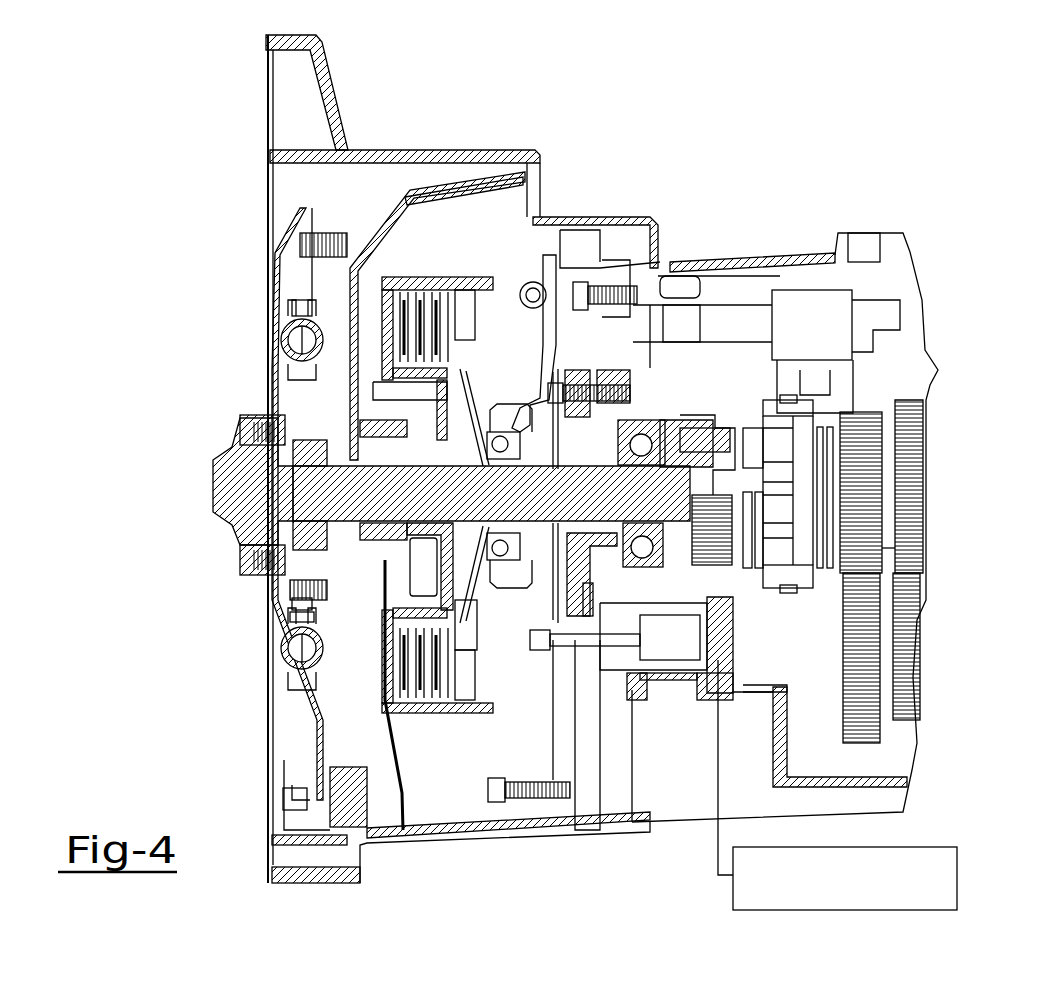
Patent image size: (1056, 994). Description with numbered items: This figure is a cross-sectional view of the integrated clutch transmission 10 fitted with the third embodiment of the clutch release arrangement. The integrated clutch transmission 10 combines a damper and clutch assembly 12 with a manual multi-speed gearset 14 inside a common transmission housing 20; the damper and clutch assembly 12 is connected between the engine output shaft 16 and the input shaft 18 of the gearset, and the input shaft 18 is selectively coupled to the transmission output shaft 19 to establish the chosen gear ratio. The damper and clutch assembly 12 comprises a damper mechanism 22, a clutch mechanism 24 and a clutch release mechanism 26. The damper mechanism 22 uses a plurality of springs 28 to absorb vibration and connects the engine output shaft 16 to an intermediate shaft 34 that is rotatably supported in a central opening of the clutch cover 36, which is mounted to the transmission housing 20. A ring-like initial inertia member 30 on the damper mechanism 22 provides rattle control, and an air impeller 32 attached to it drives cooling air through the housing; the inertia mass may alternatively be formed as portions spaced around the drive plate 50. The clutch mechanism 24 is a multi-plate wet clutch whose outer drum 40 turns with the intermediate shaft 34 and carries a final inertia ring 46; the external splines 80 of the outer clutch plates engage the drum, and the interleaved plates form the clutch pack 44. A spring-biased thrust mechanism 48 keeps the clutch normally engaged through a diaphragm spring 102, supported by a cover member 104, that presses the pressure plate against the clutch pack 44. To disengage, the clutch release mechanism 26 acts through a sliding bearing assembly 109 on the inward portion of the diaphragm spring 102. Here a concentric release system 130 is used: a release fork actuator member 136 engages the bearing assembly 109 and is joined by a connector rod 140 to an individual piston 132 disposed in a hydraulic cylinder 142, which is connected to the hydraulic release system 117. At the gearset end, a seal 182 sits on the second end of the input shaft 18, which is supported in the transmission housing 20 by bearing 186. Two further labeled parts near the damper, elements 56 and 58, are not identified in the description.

The integrated clutch transmission 10 is at (768, 152).
The damper and clutch assembly 12 is at (410, 233).
The multi-speed gearset 14 is at (820, 283).
The engine output shaft 16 is at (245, 435).
The input shaft 18 is at (415, 508).
The transmission output shaft 19 is at (895, 545).
The transmission housing 20 is at (895, 767).
The damper mechanism 22 is at (265, 763).
The clutch mechanism 24 is at (386, 688).
The clutch release mechanism 26 is at (515, 394).
The springs 28 is at (293, 652).
The initial inertia member 30 is at (353, 190).
The air impeller 32 is at (383, 813).
The intermediate shaft 34 is at (307, 490).
The clutch cover 36 is at (350, 316).
The outer drum 40 is at (440, 690).
The multi-disc clutch pack 44 is at (478, 208).
The final inertia ring 46 is at (503, 255).
The spring-biased thrust mechanism 48 is at (520, 700).
The drive plate 50 is at (290, 320).
The spring seat 56 is at (303, 608).
The spring seat 58 is at (297, 623).
The external splines 80 is at (472, 436).
The diaphragm spring 102 is at (290, 550).
The cover member 104 is at (467, 640).
The sliding bearing assembly 109 is at (600, 410).
The hydraulic release system 117 is at (957, 862).
The concentric release system 130 is at (580, 647).
The piston 132 is at (658, 665).
The release fork actuator member 136 is at (553, 690).
The connector rod 140 is at (612, 690).
The hydraulic cylinder 142 is at (847, 675).
The seal 182 is at (627, 447).
The bearing 186 is at (672, 452).